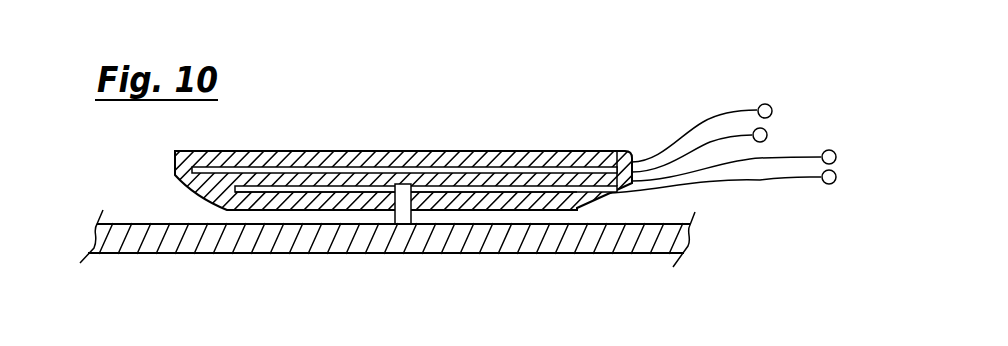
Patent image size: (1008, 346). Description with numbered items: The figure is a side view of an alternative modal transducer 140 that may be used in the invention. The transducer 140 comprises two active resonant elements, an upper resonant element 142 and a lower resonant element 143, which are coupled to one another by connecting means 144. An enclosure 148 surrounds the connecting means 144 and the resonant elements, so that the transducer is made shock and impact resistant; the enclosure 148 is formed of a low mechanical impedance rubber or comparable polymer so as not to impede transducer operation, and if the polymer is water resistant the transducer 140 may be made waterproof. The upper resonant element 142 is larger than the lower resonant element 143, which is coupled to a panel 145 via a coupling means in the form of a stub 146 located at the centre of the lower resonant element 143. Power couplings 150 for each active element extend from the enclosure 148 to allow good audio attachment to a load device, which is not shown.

The transducer 140 is at (483, 138).
The upper resonant element 142 is at (330, 168).
The lower resonant element 143 is at (513, 192).
The connecting means 144 is at (413, 177).
The panel 145 is at (267, 254).
The stub 146 is at (402, 214).
The enclosure 148 is at (173, 160).
The power couplings 150 is at (828, 143).